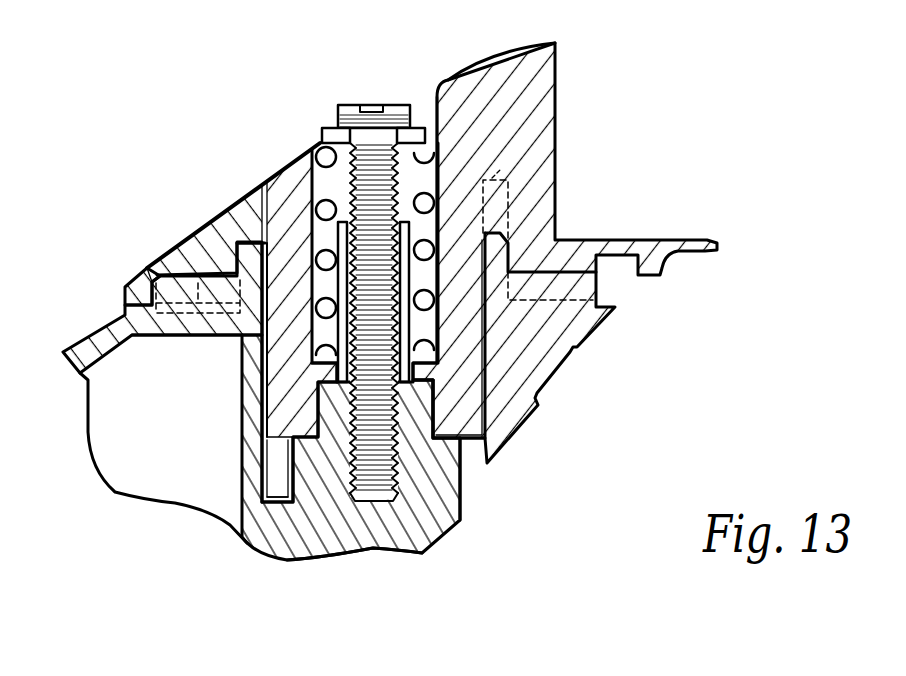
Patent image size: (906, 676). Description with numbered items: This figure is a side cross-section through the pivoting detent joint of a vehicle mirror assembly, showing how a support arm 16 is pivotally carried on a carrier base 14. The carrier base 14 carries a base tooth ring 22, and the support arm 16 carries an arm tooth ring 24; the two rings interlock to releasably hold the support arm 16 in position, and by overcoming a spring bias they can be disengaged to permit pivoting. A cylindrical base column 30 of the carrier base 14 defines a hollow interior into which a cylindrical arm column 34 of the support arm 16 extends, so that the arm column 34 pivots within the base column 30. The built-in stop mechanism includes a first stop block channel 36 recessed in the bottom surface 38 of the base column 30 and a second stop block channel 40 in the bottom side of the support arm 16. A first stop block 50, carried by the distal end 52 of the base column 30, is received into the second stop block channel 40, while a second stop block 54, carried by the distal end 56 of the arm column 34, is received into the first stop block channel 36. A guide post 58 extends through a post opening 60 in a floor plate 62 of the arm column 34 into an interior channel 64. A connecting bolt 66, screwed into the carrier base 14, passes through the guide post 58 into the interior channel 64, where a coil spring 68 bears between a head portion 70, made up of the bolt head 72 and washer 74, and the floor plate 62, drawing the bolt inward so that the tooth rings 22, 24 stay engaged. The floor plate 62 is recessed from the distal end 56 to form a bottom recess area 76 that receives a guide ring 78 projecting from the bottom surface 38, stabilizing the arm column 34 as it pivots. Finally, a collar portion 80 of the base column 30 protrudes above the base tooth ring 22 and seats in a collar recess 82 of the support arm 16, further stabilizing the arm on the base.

The carrier base 14 is at (110, 345).
The support arm 16 is at (538, 95).
The base tooth ring 22 is at (147, 268).
The arm tooth ring 24 is at (167, 242).
The cylindrical base column 30 is at (242, 455).
The cylindrical arm column 34 is at (243, 350).
The first stop block channel 36 is at (273, 504).
The bottom surface 38 is at (352, 547).
The second stop block channel 40 is at (496, 174).
The first stop block 50 is at (511, 180).
The distal end 52 is at (247, 196).
The second stop block 54 is at (273, 466).
The distal end 56 is at (472, 440).
The guide post 58 is at (253, 242).
The post opening 60 is at (487, 327).
The floor plate 62 is at (487, 373).
The interior channel 64 is at (427, 92).
The connecting bolt 66 is at (350, 183).
The coil spring 68 is at (556, 43).
The head portion 70 is at (338, 106).
The bolt head 72 is at (353, 112).
The washer 74 is at (362, 238).
The bottom recess area 76 is at (425, 413).
The guide ring 78 is at (242, 442).
The collar portion 80 is at (230, 275).
The collar recess 82 is at (247, 248).